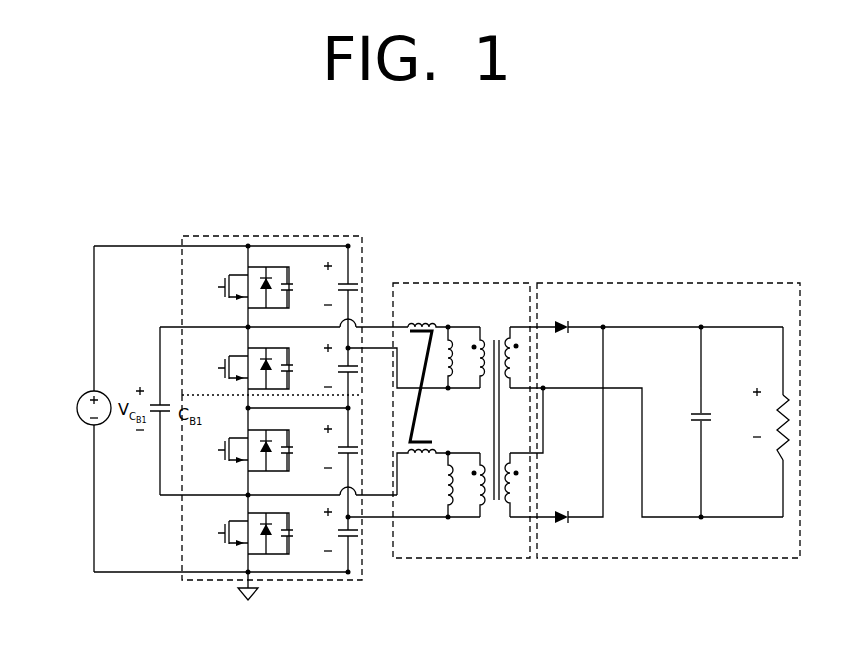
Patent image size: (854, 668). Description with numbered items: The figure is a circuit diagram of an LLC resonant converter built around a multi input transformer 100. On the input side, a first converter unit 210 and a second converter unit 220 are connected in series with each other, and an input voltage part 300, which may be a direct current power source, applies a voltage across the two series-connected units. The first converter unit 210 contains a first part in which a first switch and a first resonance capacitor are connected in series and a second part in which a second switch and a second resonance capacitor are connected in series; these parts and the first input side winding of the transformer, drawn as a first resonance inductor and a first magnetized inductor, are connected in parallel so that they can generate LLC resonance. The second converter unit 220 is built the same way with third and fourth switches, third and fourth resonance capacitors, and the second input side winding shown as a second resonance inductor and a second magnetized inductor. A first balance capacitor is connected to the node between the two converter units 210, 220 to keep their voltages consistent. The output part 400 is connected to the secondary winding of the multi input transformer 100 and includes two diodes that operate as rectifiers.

The multi input transformer 100 is at (462, 283).
The first converter unit 210 is at (275, 236).
The second converter unit 220 is at (277, 582).
The input voltage part 300 is at (80, 396).
The output part 400 is at (670, 283).